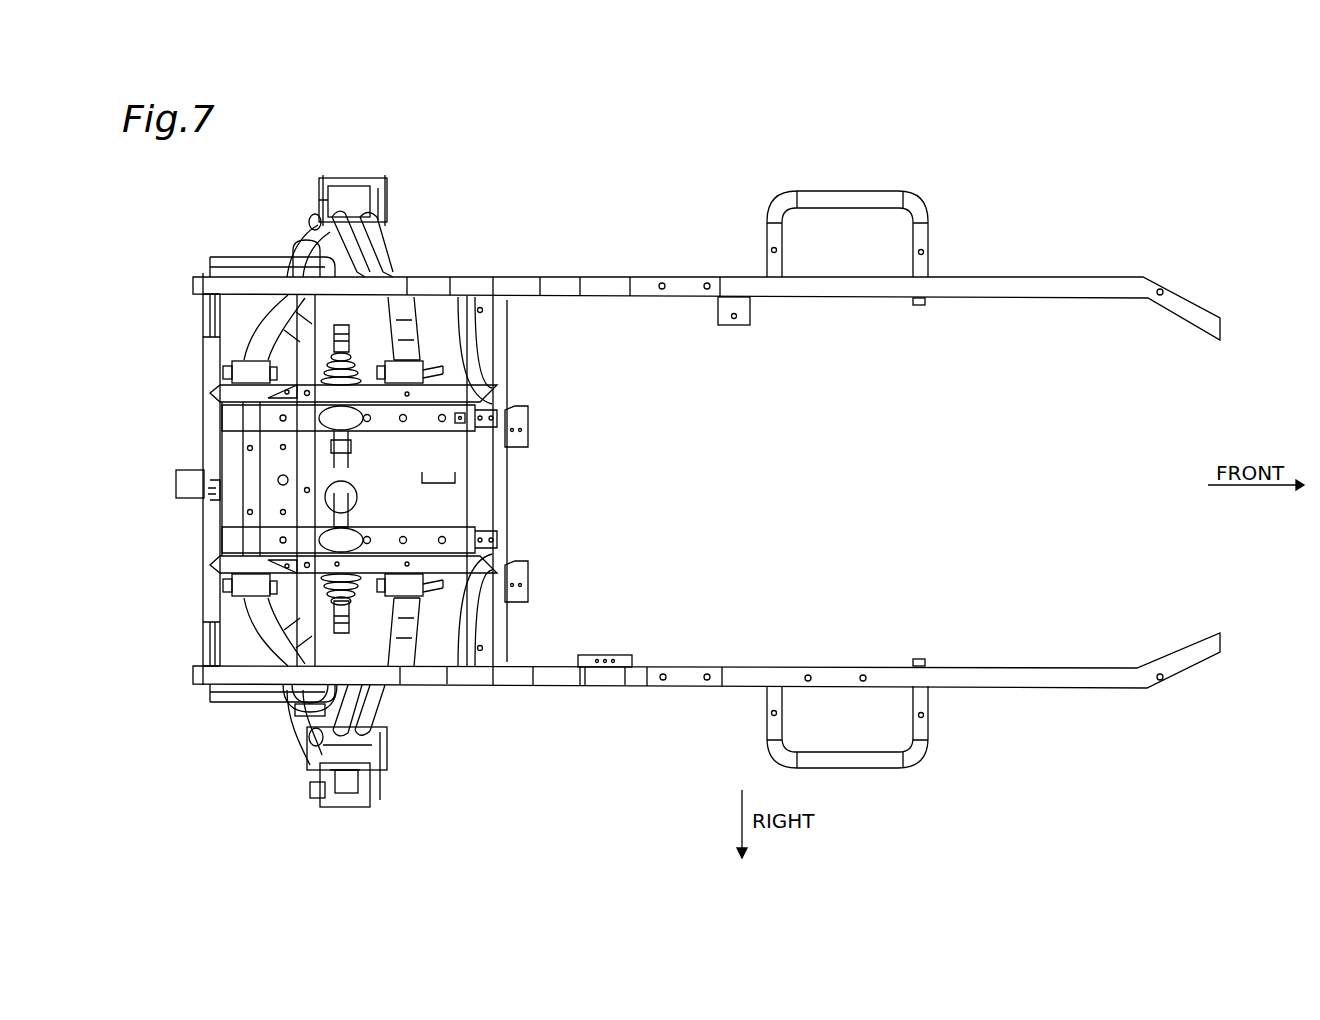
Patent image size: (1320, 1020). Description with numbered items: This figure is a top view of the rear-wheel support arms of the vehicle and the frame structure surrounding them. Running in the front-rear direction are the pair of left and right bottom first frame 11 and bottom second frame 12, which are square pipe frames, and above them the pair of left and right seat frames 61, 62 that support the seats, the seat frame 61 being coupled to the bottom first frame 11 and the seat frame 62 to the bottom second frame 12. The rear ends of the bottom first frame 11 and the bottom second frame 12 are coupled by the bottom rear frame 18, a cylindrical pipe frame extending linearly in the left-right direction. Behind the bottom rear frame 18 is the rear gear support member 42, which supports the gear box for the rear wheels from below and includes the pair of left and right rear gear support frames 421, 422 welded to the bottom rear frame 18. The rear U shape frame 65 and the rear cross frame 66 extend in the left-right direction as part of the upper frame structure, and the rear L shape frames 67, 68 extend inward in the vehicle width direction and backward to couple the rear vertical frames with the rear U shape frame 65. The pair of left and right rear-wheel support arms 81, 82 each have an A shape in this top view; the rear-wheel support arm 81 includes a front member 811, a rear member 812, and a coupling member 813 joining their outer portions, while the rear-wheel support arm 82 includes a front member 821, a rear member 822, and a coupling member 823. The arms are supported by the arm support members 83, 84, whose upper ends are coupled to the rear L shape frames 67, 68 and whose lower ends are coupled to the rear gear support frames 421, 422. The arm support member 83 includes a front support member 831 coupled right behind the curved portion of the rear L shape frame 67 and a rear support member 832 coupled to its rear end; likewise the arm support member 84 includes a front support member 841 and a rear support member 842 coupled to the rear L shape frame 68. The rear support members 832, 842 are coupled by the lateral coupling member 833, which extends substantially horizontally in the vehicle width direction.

The bottom first frame 11 is at (1072, 690).
The bottom second frame 12 is at (1072, 290).
The bottom rear frame 18 is at (500, 632).
The rear gear support member 42 is at (397, 492).
The rear gear support frame 421 is at (425, 542).
The rear gear support frame 422 is at (440, 403).
The seat frame 61 is at (684, 690).
The seat frame 62 is at (684, 285).
The rear U shape frame 65 is at (212, 372).
The rear cross frame 66 is at (307, 345).
The rear L shape frame 67 is at (397, 566).
The rear L shape frame 68 is at (372, 392).
The rear-wheel support arm 81 is at (351, 755).
The front member 811 is at (383, 695).
The rear member 812 is at (280, 653).
The coupling member 813 is at (357, 737).
The rear-wheel support arm 82 is at (346, 196).
The front member 821 is at (382, 250).
The rear member 822 is at (286, 303).
The coupling member 823 is at (357, 222).
The arm support member 83 is at (311, 672).
The front support member 831 is at (400, 592).
The rear support member 832 is at (227, 587).
The lateral coupling member 833 is at (245, 437).
The arm support member 84 is at (321, 287).
The front support member 841 is at (420, 388).
The rear support member 842 is at (250, 372).